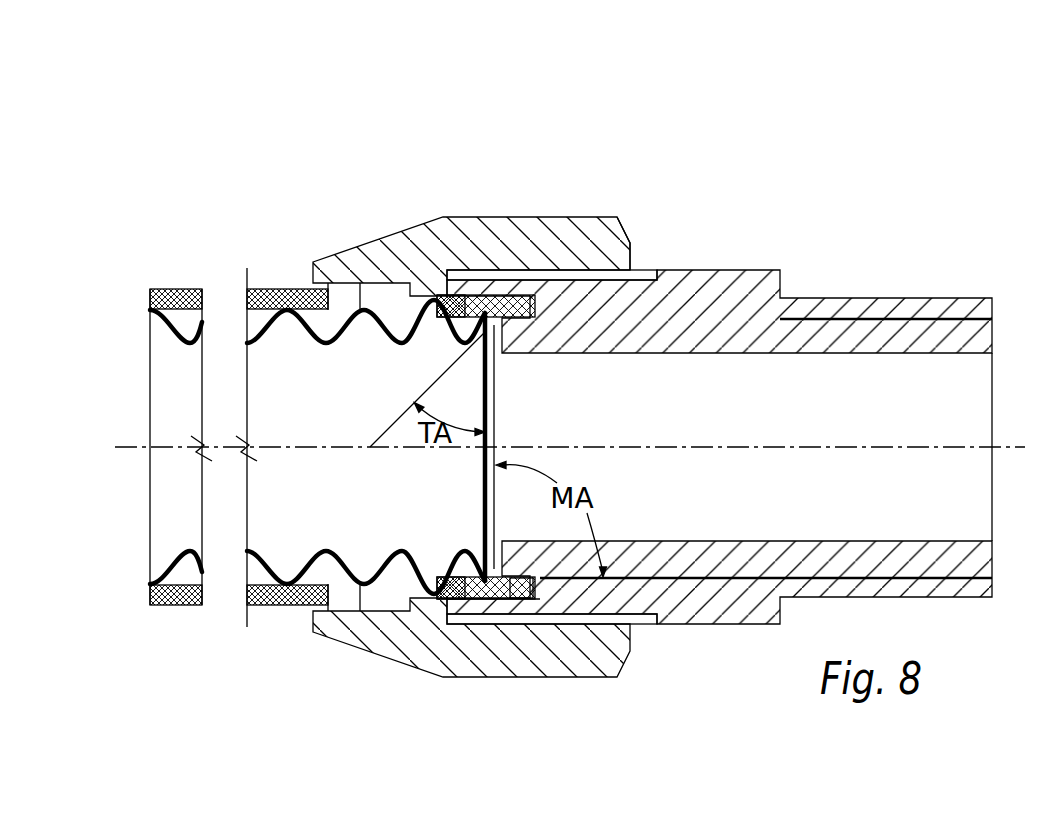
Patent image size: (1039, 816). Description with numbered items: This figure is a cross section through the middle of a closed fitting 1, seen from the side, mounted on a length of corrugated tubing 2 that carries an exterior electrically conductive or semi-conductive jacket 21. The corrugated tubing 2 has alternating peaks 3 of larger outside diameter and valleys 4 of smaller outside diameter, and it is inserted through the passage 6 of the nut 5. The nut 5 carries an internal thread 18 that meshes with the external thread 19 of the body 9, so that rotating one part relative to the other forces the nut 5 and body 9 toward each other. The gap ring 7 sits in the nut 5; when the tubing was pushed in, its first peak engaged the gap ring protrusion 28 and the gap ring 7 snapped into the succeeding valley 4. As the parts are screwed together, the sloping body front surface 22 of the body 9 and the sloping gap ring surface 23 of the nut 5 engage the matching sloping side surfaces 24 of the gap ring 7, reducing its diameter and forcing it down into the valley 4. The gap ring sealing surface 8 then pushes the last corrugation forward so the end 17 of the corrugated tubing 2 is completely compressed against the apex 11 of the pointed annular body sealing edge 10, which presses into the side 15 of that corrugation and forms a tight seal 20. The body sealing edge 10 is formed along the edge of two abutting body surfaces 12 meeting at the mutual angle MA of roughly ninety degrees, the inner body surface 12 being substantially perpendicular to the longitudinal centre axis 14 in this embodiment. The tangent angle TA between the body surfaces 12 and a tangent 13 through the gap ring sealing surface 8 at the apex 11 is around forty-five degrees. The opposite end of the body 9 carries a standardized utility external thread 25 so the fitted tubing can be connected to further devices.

The fitting 1 is at (296, 134).
The corrugated tubing 2 is at (260, 288).
The peak 3 is at (340, 258).
The valley 4 is at (313, 283).
The nut 5 is at (445, 640).
The passage 6 is at (300, 512).
The gap ring 7 is at (475, 600).
The gap ring sealing surface 8 is at (498, 615).
The body 9 is at (747, 583).
The body sealing edge 10 is at (593, 673).
The apex 11 is at (593, 673).
The body surface 12 is at (658, 272).
The tangent 13 is at (580, 262).
The centre axis 14 is at (905, 447).
The side 15 is at (608, 638).
The end 17 is at (600, 614).
The internal thread 18 is at (498, 221).
The external thread 19 is at (517, 275).
The seal 20 is at (545, 607).
The jacket 21 is at (173, 289).
The body front surface 22 is at (447, 277).
The gap ring surface 23 is at (412, 280).
The side surfaces 24 is at (433, 603).
The utility external thread 25 is at (900, 310).
The gap ring protrusion 28 is at (466, 295).